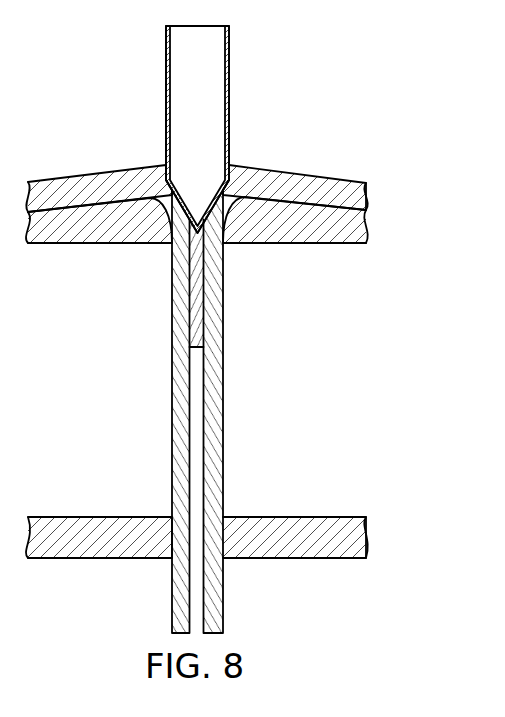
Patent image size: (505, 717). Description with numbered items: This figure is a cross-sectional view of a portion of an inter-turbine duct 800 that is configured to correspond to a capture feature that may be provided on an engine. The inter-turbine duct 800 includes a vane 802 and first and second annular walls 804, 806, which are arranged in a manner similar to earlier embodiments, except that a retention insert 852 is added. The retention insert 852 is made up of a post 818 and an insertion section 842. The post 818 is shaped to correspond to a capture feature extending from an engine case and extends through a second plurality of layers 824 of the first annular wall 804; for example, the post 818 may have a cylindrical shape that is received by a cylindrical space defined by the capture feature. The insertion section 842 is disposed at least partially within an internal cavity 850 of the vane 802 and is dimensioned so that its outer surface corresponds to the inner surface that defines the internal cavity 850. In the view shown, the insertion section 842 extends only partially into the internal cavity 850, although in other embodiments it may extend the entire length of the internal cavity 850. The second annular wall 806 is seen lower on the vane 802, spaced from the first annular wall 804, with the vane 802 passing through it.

The inter-turbine duct 800 is at (367, 92).
The vane 802 is at (210, 400).
The first annular wall 804 is at (352, 203).
The second annular wall 806 is at (366, 541).
The post 818 is at (229, 97).
The second plurality of layers 824 is at (320, 200).
The insertion section 842 is at (200, 280).
The internal cavity 850 is at (193, 377).
The retention insert 852 is at (165, 97).